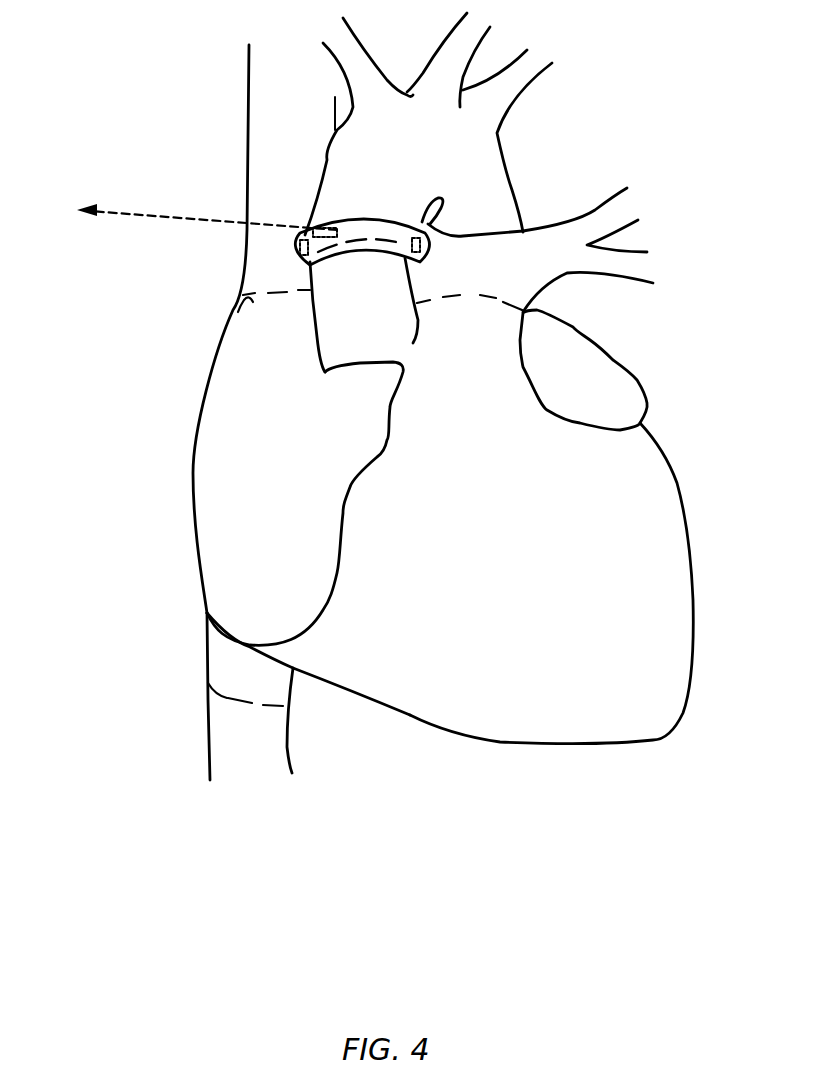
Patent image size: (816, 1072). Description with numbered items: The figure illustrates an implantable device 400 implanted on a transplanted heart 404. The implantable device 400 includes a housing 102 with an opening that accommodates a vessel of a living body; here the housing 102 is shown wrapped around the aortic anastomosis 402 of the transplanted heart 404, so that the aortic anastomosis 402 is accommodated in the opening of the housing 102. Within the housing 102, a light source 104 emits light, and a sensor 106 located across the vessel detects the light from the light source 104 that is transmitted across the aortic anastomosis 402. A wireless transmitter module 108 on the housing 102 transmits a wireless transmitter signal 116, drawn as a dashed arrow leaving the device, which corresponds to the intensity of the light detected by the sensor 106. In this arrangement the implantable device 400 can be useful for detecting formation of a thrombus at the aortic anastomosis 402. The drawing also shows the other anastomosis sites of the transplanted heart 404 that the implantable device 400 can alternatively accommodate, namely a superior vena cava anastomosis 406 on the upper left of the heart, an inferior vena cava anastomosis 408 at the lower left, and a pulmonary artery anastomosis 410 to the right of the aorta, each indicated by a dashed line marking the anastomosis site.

The housing 102 is at (347, 223).
The light source 104 is at (297, 262).
The sensor 106 is at (423, 260).
The wireless transmitter module 108 is at (323, 228).
The wireless transmitter signal 116 is at (132, 215).
The implantable device 400 is at (394, 204).
The aortic anastomosis 402 is at (335, 243).
The transplanted heart 404 is at (657, 503).
The superior vena cava anastomosis 406 is at (253, 302).
The inferior vena cava anastomosis 408 is at (228, 698).
The pulmonary artery anastomosis 410 is at (478, 292).